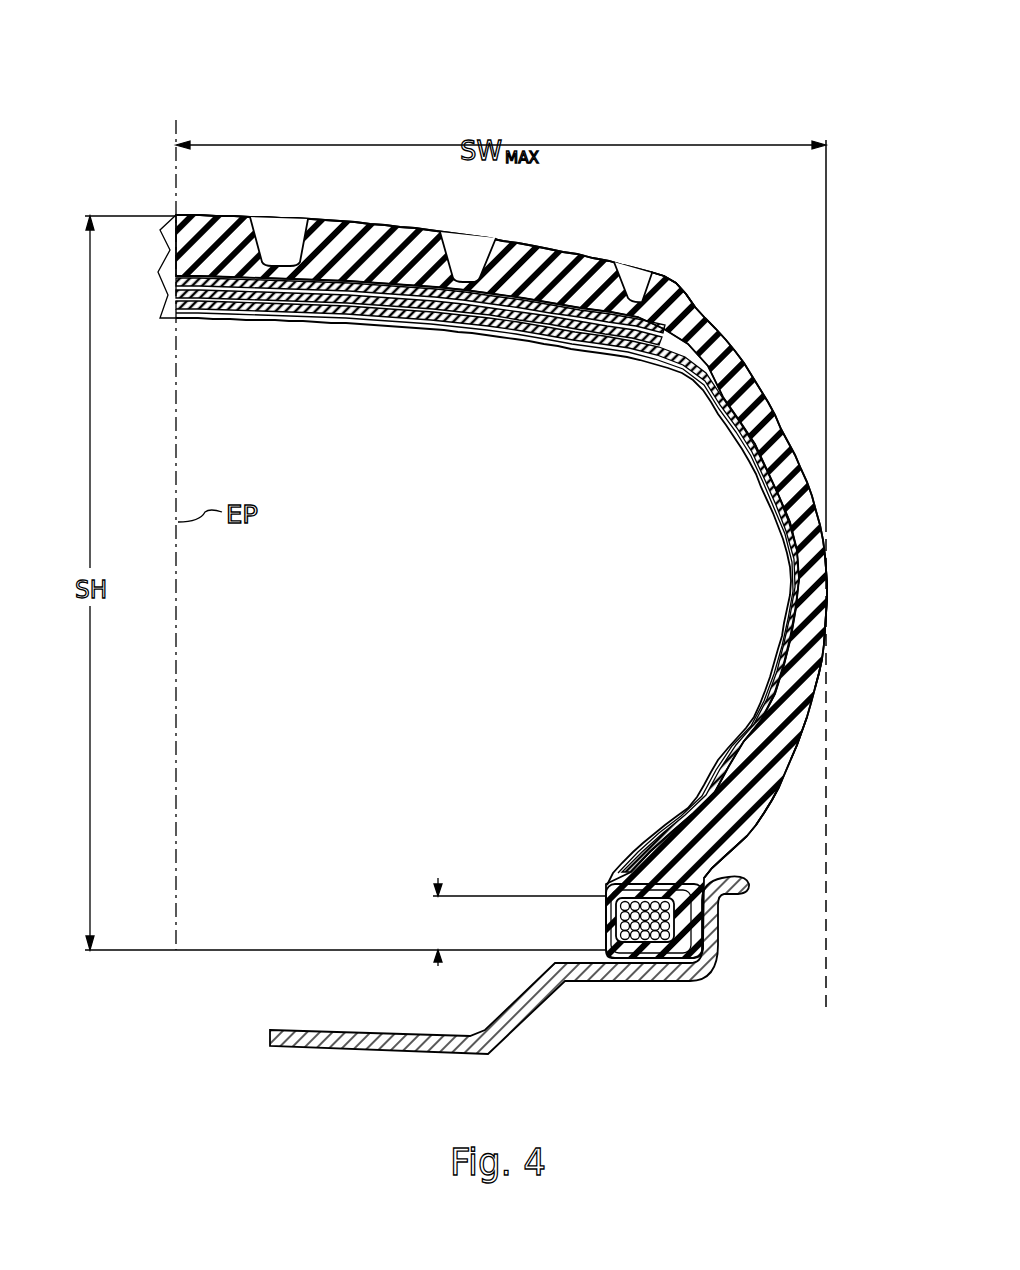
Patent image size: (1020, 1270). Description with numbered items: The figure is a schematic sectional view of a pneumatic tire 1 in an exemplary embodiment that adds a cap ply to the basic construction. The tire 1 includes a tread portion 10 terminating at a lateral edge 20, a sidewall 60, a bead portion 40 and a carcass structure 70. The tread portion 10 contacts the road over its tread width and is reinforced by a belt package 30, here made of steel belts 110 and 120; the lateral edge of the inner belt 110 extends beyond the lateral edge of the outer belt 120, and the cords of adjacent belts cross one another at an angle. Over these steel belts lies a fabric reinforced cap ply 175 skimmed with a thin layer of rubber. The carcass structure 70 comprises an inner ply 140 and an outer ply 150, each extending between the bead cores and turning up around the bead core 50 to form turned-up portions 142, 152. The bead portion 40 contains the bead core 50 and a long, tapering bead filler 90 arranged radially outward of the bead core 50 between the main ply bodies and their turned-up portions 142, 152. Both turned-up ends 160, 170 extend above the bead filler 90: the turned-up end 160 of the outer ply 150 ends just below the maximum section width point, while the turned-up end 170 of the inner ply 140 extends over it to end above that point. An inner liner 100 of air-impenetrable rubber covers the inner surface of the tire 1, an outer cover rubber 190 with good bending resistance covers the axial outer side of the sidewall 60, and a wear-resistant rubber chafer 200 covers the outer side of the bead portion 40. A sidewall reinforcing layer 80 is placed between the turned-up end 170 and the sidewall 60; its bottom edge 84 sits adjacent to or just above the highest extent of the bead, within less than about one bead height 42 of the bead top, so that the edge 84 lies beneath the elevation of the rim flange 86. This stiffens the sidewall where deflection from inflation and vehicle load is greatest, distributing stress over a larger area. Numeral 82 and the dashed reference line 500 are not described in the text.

The pneumatic tire 1 is at (770, 68).
The tread portion 10 is at (345, 221).
The belt package 30 is at (516, 241).
The lateral edge 20 is at (688, 305).
The carcass structure 70 is at (218, 304).
The fabric reinforced cap ply 175 is at (688, 345).
The lateral edge of inner belt 110 is at (672, 372).
The outer ply 150 is at (762, 408).
The inner liner 100 is at (692, 392).
The inner ply 140 is at (757, 460).
The lateral edge of outer belt 120 is at (668, 318).
The turned-up end of inner ply 170 is at (823, 545).
The reference line 500 is at (830, 993).
The sidewall 60 is at (810, 572).
The outer cover rubber 190 is at (823, 588).
The sidewall indicator 82 is at (817, 620).
The turned-up end of outer ply 160 is at (803, 650).
The sidewall reinforcing layer 80 is at (790, 752).
The turned-up portion of inner ply 142 is at (757, 808).
The bead filler 90 is at (677, 808).
The rim flange 86 is at (707, 888).
The turned-up portion of outer ply 152 is at (722, 872).
The bead portion 40 is at (598, 912).
The bead core 50 is at (688, 930).
The bottom edge of sidewall reinforcing layer 84 is at (672, 915).
The rubber chafer 200 is at (655, 975).
The bead height 42 is at (515, 922).